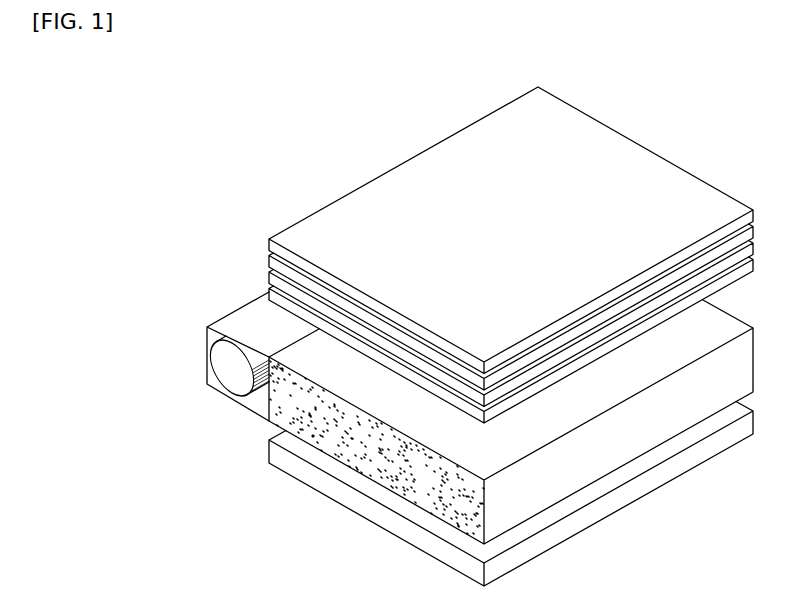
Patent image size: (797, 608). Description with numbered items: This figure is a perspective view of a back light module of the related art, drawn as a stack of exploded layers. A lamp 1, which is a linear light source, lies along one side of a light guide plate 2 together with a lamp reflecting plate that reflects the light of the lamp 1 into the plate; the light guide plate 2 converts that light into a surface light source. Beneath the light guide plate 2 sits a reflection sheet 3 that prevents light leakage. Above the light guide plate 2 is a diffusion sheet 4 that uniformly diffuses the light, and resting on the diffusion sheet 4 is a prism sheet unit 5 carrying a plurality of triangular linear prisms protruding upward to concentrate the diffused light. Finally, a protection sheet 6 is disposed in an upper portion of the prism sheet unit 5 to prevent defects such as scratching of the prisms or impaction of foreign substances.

The lamp 1 is at (230, 364).
The light guide plate 2 is at (280, 406).
The reflection sheet 3 is at (300, 470).
The diffusion sheet 4 is at (268, 291).
The prism sheet unit 5 is at (269, 277).
The protection sheet 6 is at (269, 242).